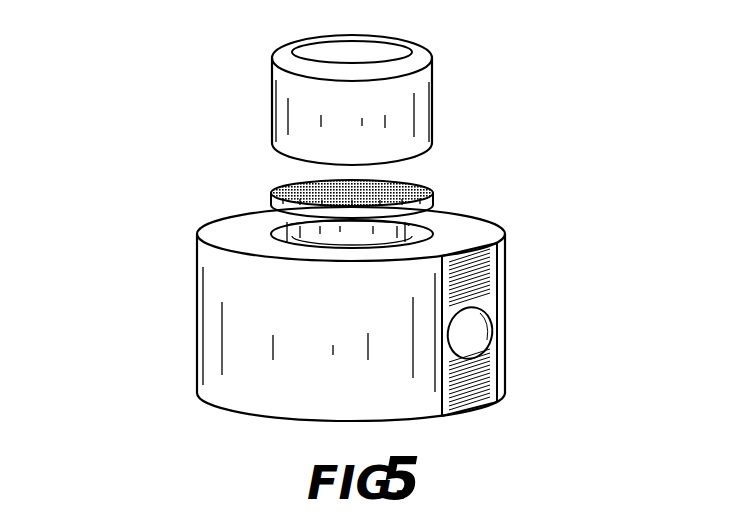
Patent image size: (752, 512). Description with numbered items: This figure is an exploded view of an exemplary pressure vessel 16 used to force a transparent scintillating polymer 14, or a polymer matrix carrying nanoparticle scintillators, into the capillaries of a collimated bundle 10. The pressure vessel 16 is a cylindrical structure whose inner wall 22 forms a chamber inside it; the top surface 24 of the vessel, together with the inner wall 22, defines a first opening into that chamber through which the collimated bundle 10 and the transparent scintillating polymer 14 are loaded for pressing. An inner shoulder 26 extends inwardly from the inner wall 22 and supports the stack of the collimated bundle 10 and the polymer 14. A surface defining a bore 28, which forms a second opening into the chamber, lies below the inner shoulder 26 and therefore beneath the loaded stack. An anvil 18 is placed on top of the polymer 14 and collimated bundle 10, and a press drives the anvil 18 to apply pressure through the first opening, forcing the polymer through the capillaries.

The collimated bundle 10 is at (362, 223).
The transparent scintillating polymer 14 is at (283, 190).
The pressure vessel 16 is at (197, 290).
The anvil 18 is at (433, 109).
The inner wall 22 is at (272, 221).
The top surface 24 is at (498, 241).
The inner shoulder 26 is at (440, 209).
The bore 28 is at (467, 335).